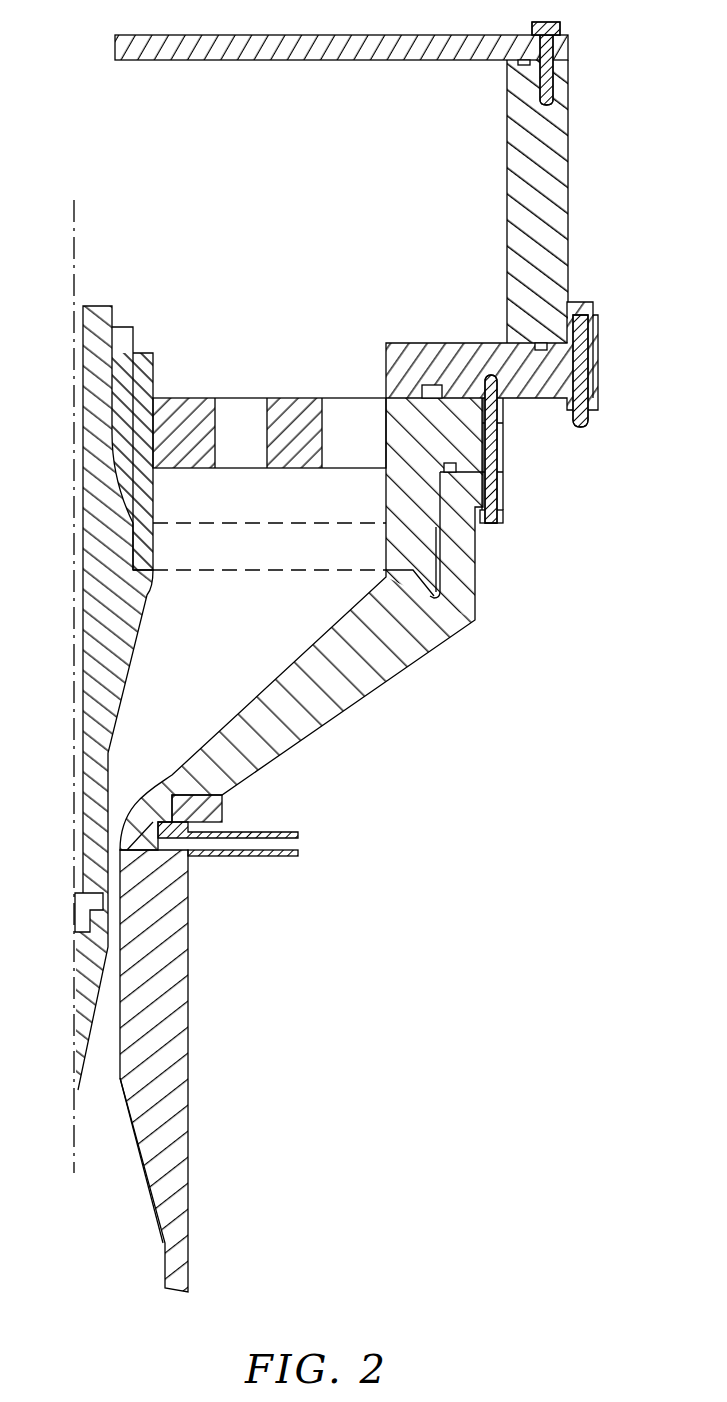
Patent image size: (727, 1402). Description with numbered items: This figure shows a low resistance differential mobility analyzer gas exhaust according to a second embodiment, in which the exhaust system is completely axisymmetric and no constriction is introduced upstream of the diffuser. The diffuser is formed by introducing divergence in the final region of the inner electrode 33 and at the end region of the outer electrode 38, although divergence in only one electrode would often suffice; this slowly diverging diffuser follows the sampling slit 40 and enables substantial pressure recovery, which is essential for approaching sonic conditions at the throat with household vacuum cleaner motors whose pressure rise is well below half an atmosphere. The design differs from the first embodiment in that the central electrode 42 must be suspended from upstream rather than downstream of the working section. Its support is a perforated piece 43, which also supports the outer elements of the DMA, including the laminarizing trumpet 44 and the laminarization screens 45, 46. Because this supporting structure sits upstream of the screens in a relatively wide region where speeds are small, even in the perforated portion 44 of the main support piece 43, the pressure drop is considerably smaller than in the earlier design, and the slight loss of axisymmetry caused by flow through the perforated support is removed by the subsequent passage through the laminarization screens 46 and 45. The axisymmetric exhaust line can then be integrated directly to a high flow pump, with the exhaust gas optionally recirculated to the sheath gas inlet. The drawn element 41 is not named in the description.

The final region of the inner electrode 33 is at (97, 1025).
The end region of the outer electrode 38 is at (143, 1175).
The sampling slit 40 is at (100, 905).
The flange plates 41 is at (115, 877).
The central electrode 42 is at (118, 652).
The perforated piece 43 is at (293, 410).
The laminarizing trumpet 44 is at (307, 650).
The laminarization screen 45 is at (310, 523).
The laminarization screen 46 is at (205, 575).